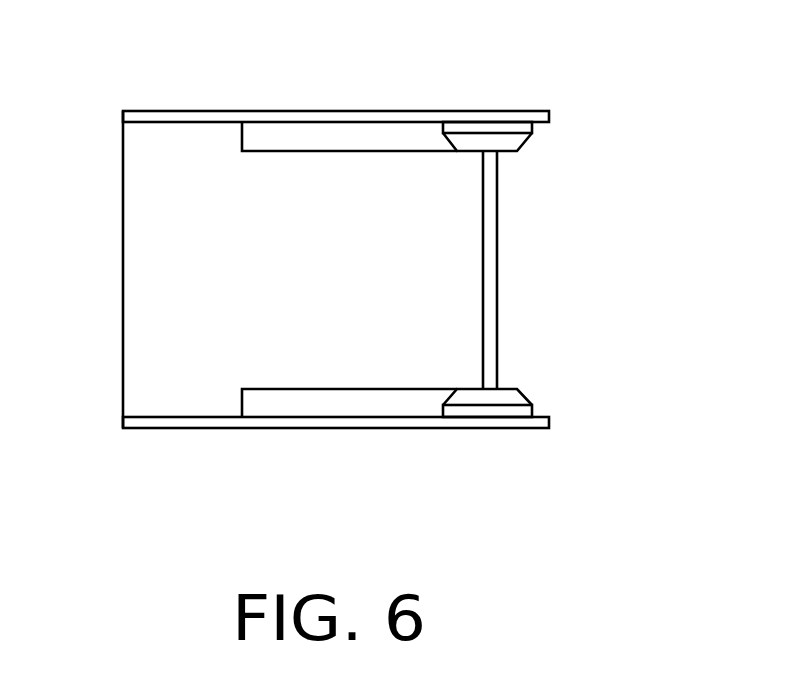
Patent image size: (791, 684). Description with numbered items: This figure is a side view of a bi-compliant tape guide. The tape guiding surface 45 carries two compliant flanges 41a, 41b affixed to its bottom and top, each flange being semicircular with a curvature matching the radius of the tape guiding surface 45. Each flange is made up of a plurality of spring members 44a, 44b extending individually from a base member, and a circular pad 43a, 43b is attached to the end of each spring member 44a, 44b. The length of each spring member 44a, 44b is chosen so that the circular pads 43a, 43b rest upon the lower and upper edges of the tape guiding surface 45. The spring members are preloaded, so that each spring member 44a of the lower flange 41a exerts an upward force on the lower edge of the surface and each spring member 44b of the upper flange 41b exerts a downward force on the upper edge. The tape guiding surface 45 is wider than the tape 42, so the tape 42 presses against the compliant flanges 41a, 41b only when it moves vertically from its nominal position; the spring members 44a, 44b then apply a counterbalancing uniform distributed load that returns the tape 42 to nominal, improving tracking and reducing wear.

The lower compliant flange 41a is at (555, 432).
The upper compliant flange 41b is at (553, 102).
The tape 42 is at (498, 265).
The circular pad 43a is at (524, 394).
The circular pad 43b is at (523, 147).
The spring member 44a is at (328, 428).
The spring member 44b is at (338, 112).
The tape guiding surface 45 is at (119, 203).